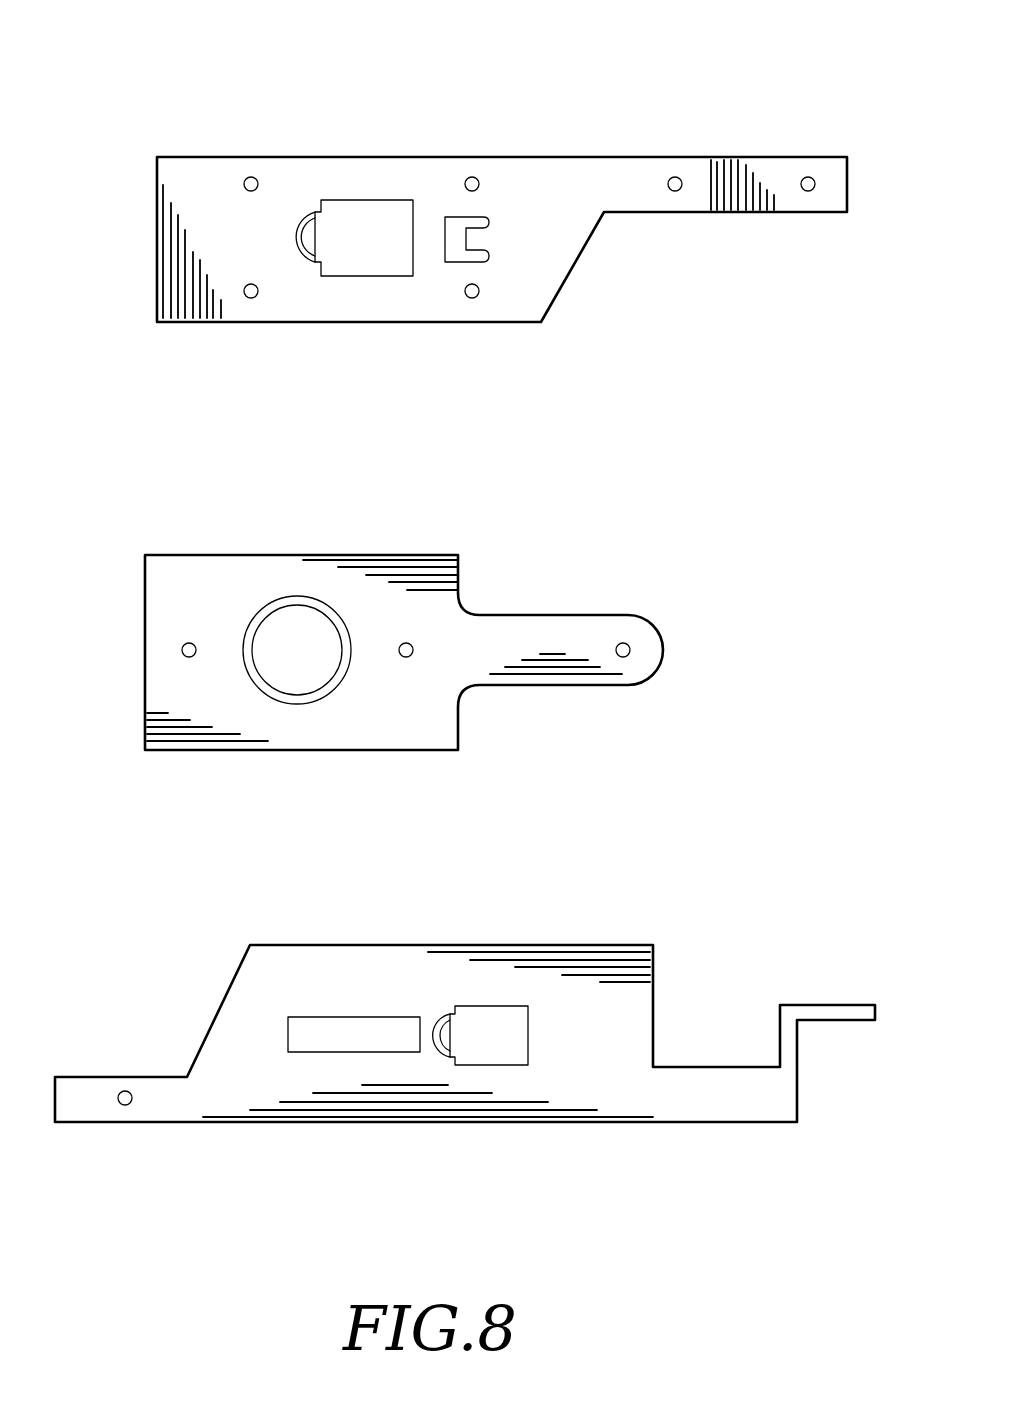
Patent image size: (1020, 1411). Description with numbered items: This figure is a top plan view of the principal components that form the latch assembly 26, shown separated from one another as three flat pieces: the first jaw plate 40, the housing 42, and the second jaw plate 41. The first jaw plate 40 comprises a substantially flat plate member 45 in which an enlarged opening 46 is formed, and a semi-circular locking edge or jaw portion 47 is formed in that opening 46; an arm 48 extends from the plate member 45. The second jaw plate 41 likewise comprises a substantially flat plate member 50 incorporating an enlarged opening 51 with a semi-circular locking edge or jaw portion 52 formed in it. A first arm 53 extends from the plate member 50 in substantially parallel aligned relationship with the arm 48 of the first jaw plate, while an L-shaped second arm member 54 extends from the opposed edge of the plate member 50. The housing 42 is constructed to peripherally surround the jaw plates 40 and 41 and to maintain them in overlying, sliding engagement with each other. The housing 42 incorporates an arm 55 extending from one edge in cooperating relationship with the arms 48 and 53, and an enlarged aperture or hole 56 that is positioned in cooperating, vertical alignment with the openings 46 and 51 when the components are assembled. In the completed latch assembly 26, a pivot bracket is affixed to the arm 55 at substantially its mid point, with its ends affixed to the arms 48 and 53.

The latch assembly 26 is at (152, 137).
The first jaw plate 40 is at (545, 183).
The second jaw plate 41 is at (241, 1023).
The housing 42 is at (165, 600).
The plate member 45 is at (228, 240).
The enlarged opening 46 is at (363, 219).
The semi-circular locking edge or jaw portion 47 is at (305, 240).
The arm 48 is at (783, 177).
The plate member 50 is at (620, 1035).
The enlarged opening 51 is at (503, 1048).
The semi-circular locking edge or jaw portion 52 is at (467, 1045).
The first arm 53 is at (91, 1100).
The second arm member 54 is at (762, 1100).
The arm 55 is at (557, 630).
The enlarged aperture or hole 56 is at (278, 618).